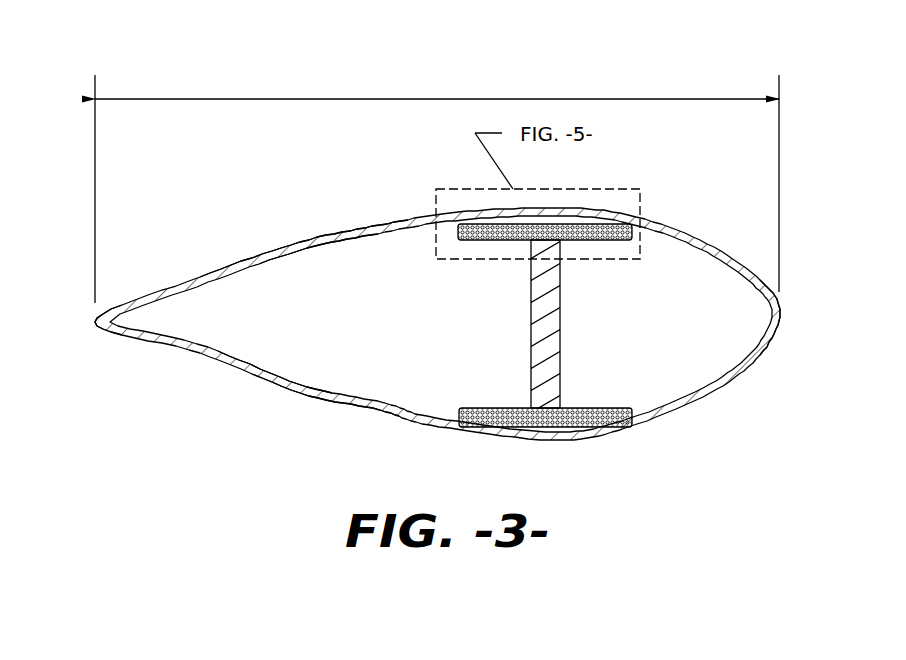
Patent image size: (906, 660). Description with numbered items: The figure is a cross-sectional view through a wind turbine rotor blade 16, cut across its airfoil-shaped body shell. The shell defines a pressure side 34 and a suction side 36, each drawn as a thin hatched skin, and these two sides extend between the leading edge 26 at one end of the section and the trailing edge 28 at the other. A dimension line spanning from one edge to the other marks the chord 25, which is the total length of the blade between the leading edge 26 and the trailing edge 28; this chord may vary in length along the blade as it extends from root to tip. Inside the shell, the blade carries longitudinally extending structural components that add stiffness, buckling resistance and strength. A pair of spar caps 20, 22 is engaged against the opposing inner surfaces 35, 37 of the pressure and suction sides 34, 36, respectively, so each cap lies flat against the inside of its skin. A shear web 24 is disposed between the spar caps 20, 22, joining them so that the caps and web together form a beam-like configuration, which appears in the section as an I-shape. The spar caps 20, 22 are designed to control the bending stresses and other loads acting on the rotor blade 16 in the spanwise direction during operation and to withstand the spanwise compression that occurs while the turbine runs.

The rotor blade 16 is at (706, 73).
The spar cap 20 is at (587, 227).
The spar cap 22 is at (587, 417).
The shear web 24 is at (561, 372).
The chord 25 is at (322, 99).
The leading edge 26 is at (782, 315).
The trailing edge 28 is at (92, 321).
The pressure side 34 is at (347, 403).
The inner surface of pressure side 35 is at (260, 362).
The suction side 36 is at (353, 228).
The inner surface of suction side 37 is at (320, 248).